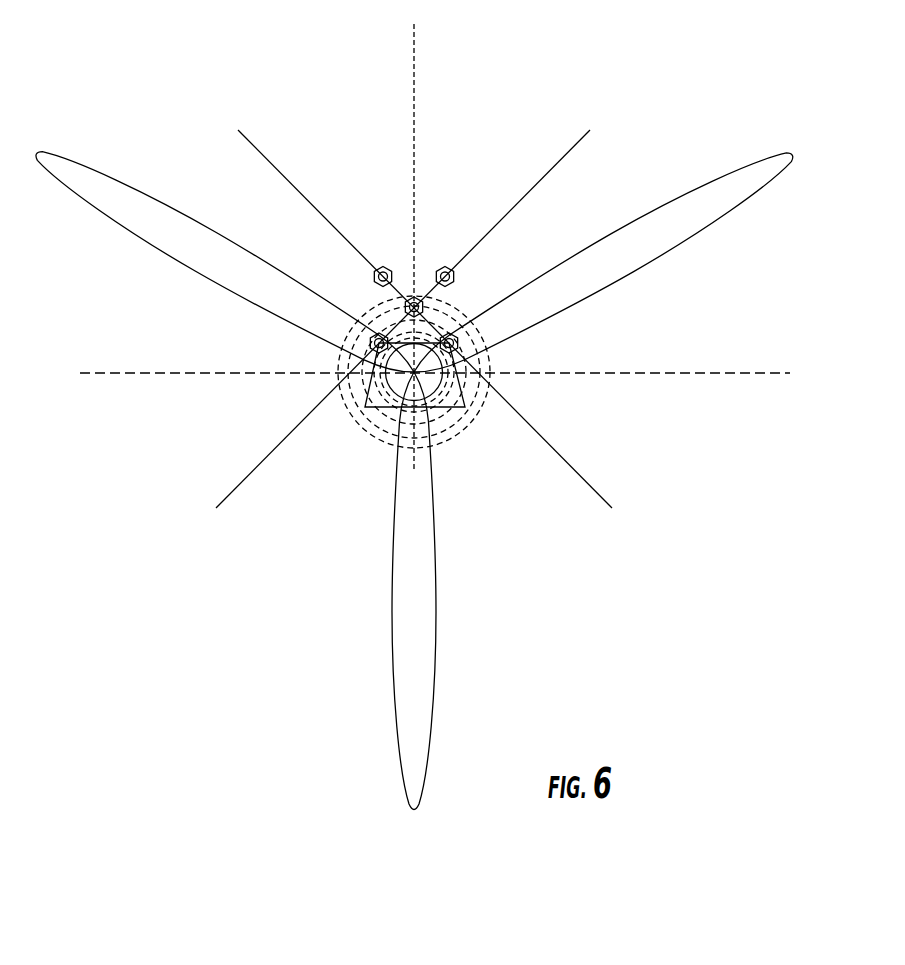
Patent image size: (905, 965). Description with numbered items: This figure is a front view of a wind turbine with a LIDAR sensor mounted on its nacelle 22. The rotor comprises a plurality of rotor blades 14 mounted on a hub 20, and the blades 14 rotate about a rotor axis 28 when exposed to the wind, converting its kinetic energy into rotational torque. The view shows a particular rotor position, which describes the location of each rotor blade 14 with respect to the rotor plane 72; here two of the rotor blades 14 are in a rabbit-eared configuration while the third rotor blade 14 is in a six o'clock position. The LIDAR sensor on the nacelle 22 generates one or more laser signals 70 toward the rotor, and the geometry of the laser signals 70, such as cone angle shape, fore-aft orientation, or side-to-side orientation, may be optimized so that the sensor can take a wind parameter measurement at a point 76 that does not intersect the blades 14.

The rotor blades 14 is at (121, 184).
The hub 20 is at (440, 393).
The nacelle 22 is at (381, 408).
The rotor axis 28 is at (661, 364).
The laser signals 70 is at (286, 176).
The rotor plane 72 is at (421, 63).
The point 76 is at (416, 298).